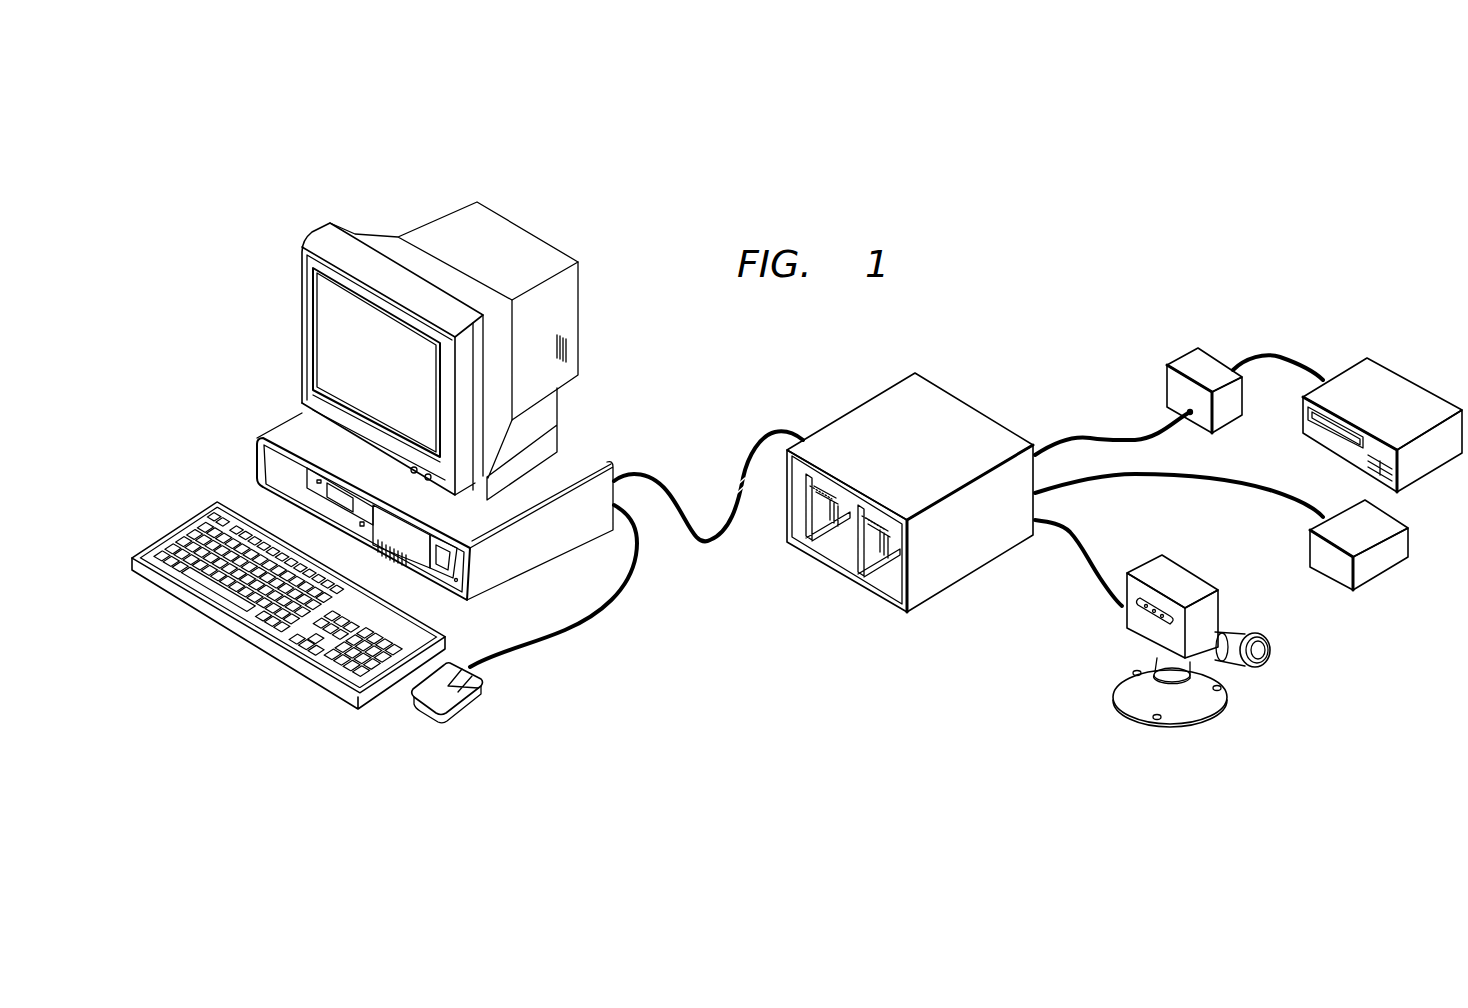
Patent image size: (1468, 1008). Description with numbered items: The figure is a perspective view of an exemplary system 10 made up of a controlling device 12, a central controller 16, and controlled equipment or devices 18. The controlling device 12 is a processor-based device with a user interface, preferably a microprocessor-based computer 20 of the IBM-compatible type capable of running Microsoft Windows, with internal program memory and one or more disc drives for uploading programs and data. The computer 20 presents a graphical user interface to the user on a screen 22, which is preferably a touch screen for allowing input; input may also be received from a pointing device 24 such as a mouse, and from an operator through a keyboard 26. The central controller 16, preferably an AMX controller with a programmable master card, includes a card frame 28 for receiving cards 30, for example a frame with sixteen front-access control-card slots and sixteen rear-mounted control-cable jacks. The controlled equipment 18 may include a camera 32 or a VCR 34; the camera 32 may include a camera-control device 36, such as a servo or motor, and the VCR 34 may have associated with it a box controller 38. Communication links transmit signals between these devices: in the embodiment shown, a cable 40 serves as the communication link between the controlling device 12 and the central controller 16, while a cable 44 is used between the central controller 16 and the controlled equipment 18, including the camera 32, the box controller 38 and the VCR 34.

The system 10 is at (704, 810).
The controlling device 12 is at (276, 150).
The central controller 16 is at (890, 403).
The controlled equipment or devices 18 is at (1348, 378).
The computer 20 is at (292, 422).
The screen 22 is at (392, 384).
The pointing device 24 is at (440, 690).
The keyboard 26 is at (193, 520).
The card frame 28 is at (978, 422).
The cards 30 is at (797, 542).
The camera 32 is at (1130, 621).
The VCR 34 is at (1406, 388).
The camera-control device 36 is at (1190, 707).
The box controller 38 is at (1210, 366).
The cable 40 is at (643, 474).
The cable 44 is at (1273, 356).